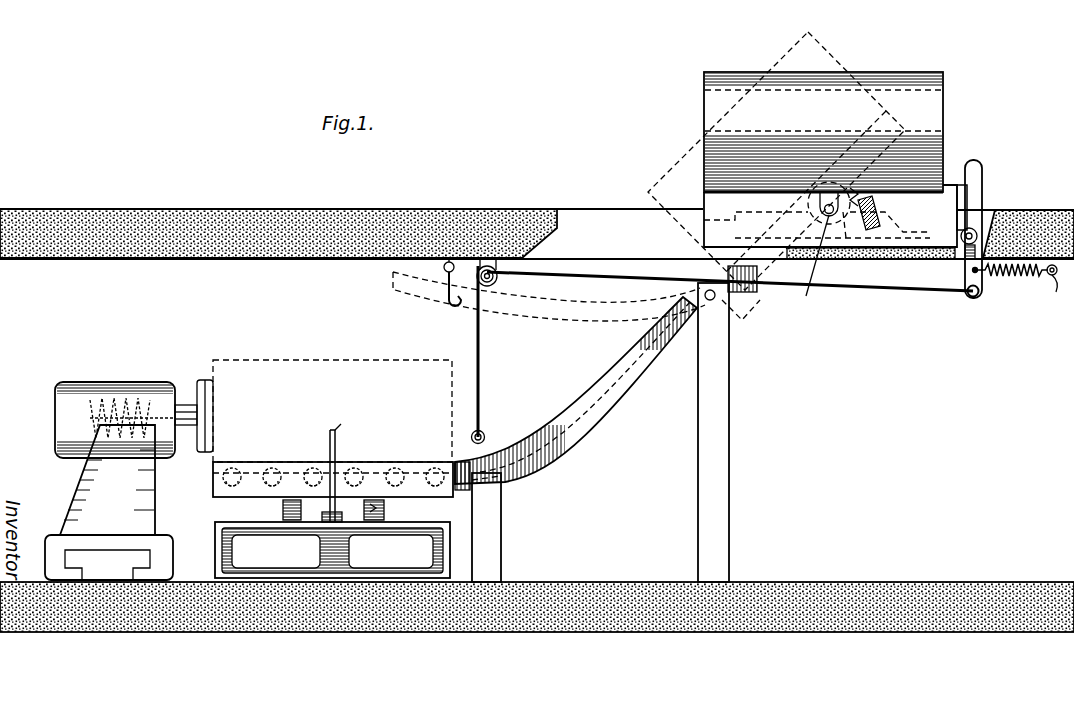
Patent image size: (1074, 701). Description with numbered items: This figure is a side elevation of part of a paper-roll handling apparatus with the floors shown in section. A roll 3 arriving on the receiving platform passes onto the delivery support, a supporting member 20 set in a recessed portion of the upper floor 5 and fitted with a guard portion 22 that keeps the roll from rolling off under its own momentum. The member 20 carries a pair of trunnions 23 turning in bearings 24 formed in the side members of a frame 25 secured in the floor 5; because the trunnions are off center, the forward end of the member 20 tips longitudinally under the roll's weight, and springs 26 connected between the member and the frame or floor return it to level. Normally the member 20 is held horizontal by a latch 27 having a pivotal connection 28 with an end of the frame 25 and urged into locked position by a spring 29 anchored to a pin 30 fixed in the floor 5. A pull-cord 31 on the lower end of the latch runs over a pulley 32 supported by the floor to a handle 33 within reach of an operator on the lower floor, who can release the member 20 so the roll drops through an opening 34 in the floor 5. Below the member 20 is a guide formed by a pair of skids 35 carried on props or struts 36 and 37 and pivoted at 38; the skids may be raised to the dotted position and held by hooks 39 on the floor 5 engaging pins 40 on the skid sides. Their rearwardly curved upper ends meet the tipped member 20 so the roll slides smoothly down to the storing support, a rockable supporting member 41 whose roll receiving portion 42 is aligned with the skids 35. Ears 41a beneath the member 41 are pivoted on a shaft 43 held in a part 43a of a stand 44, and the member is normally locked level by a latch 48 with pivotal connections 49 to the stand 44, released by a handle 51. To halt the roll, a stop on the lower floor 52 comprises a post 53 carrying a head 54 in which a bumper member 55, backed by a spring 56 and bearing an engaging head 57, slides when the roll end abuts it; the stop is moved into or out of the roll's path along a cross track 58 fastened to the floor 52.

The roll 3 is at (578, 247).
The floor 5 is at (490, 211).
The supporting member 20 is at (943, 158).
The guard portion 22 is at (865, 209).
The trunnions 23 is at (814, 266).
The bearings 24 is at (809, 216).
The frame 25 is at (908, 240).
The springs 26 is at (858, 250).
The latch 27 is at (981, 197).
The pivotal connection 28 is at (976, 233).
The spring 29 is at (1014, 278).
The pin 30 is at (1059, 286).
The pull-cord 31 is at (878, 293).
The pulley 32 is at (498, 280).
The handle 33 is at (485, 433).
The opening 34 is at (537, 234).
The skids 35 is at (634, 403).
The prop or strut 36 is at (729, 441).
The prop or strut 37 is at (495, 523).
The pivot 38 is at (736, 311).
The hooks 39 is at (447, 283).
The pins 40 is at (454, 310).
The rockable supporting member 41 is at (383, 463).
The ears 41a is at (391, 551).
The roll receiving portion 42 is at (293, 463).
The shaft 43 is at (283, 512).
The part of stand 43a is at (276, 551).
The stand 44 is at (445, 549).
The latch 48 is at (338, 466).
The pivotal connections 49 is at (318, 522).
The handle 51 is at (348, 420).
The floor 52 is at (640, 582).
The post 53 is at (107, 480).
The head 54 is at (79, 386).
The bumper member 55 is at (188, 404).
The spring 56 is at (130, 395).
The engaging head 57 is at (215, 388).
The cross track 58 is at (109, 557).